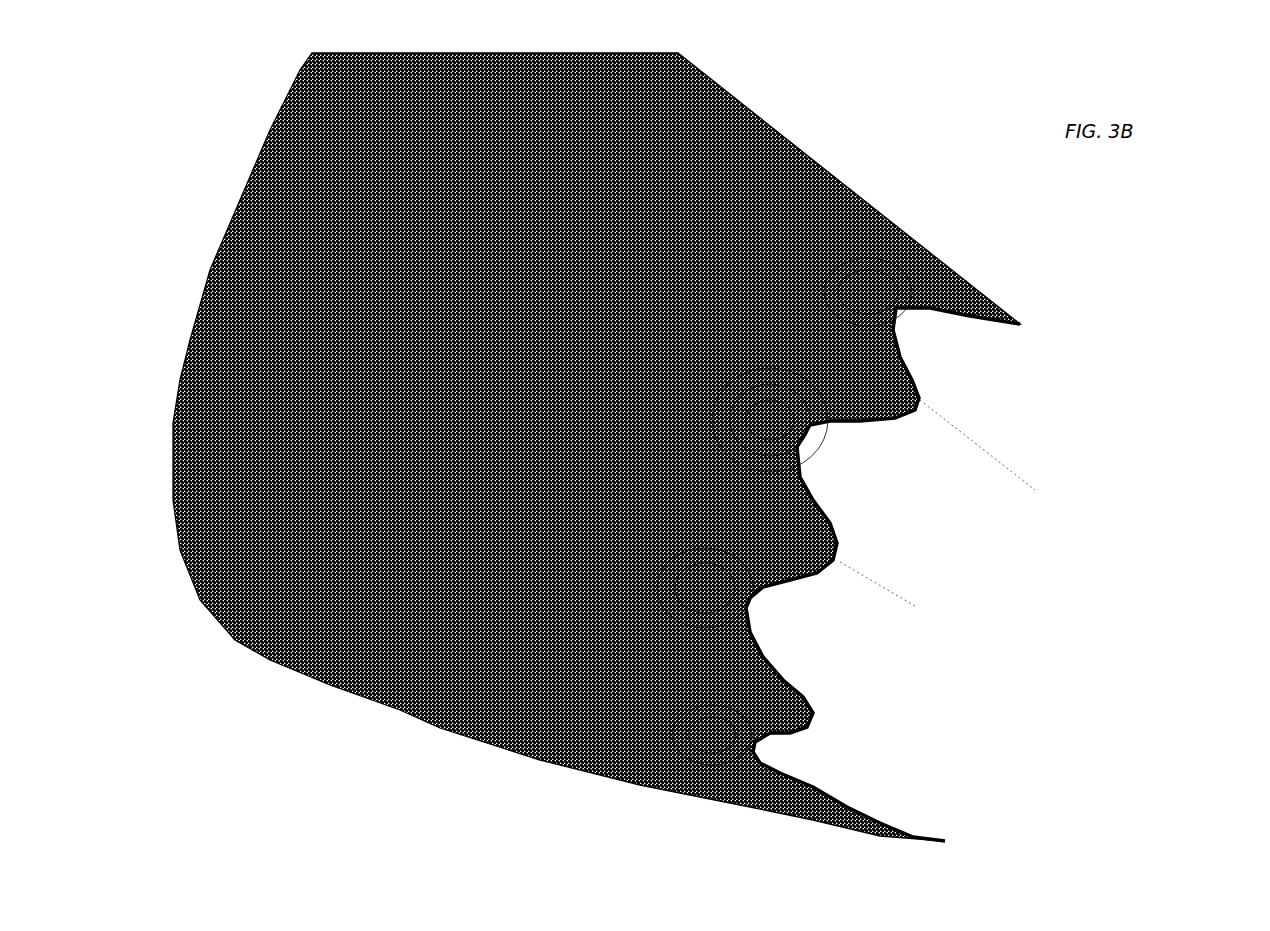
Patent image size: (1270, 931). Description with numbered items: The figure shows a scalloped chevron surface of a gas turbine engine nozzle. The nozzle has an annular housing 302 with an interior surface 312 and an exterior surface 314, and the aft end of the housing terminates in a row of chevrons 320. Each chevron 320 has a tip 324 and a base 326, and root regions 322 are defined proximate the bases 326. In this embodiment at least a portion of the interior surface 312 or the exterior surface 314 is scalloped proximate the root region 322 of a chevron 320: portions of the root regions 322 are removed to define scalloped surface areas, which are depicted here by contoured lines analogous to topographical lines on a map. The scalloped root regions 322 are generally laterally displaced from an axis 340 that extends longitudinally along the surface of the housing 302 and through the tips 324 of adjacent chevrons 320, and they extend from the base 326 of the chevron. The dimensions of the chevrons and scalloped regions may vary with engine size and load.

The annular housing 302 is at (596, 447).
The interior surface 312 is at (1090, 579).
The exterior surface 314 is at (758, 164).
The chevron 320 is at (910, 385).
The root region 322 is at (784, 511).
The tip 324 is at (925, 403).
The base 326 is at (822, 440).
The axis 340 is at (750, 284).